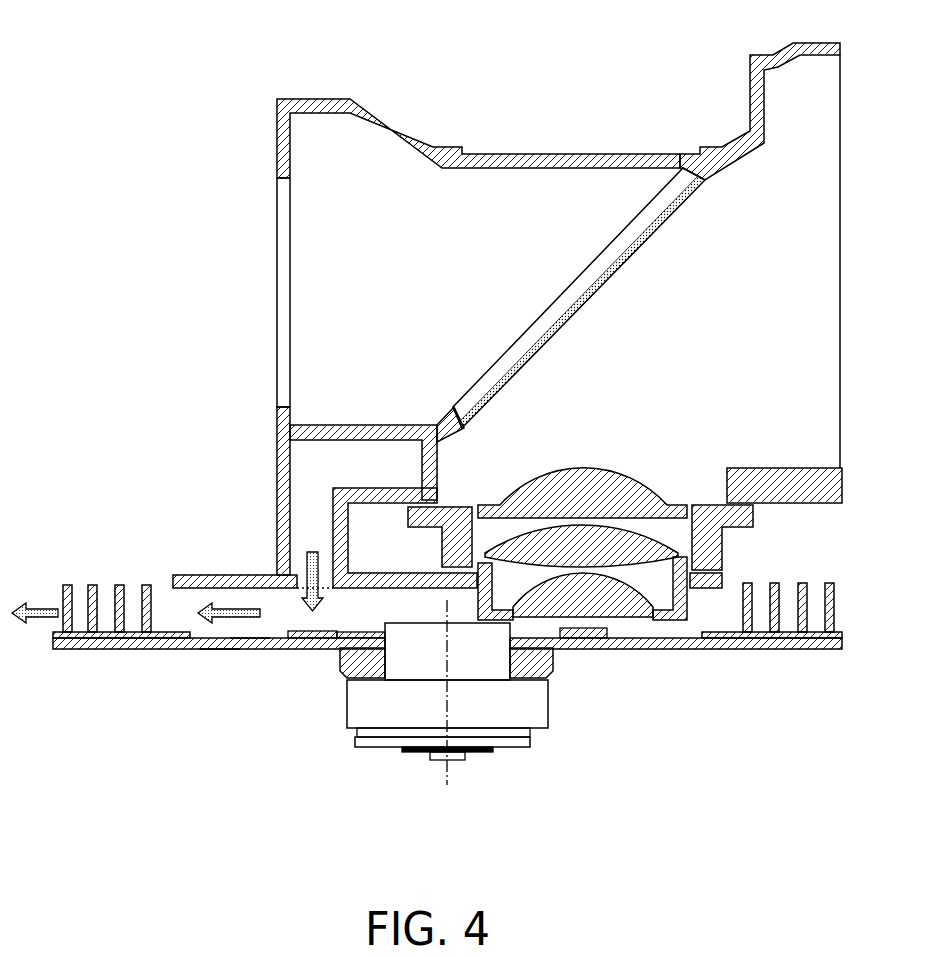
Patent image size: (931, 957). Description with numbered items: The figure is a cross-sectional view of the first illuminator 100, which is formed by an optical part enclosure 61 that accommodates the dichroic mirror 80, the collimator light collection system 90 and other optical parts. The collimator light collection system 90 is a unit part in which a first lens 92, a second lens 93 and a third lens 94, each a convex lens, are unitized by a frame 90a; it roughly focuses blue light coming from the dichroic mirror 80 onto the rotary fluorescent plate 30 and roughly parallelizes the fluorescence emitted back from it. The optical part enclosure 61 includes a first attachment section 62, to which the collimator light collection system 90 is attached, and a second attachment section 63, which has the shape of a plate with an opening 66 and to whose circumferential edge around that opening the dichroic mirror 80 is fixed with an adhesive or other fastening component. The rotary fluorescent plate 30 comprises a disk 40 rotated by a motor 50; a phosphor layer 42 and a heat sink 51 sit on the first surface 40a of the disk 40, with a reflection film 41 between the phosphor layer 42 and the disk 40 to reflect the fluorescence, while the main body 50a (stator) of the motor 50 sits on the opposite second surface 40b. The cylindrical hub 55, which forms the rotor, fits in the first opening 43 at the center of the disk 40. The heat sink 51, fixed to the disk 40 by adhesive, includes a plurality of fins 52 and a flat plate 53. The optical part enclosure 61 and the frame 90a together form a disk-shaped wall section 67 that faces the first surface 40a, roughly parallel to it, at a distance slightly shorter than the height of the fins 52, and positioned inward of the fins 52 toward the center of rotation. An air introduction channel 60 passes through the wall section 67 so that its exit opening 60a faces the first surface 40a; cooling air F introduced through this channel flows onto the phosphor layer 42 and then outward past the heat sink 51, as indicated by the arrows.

The first illuminator 100 is at (250, 93).
The rotary fluorescent plate 30 is at (268, 771).
The disk 40 is at (197, 650).
The first surface 40a is at (250, 650).
The second surface 40b is at (222, 650).
The reflection film 41 is at (302, 627).
The phosphor layer 42 is at (266, 628).
The first opening 43 is at (517, 688).
The motor 50 is at (486, 721).
The main body 50a is at (522, 750).
The heat sink 51 is at (432, 535).
The fins 52 is at (88, 584).
The flat plate 53 is at (108, 632).
The hub 55 is at (500, 645).
The air introduction channel 60 is at (304, 524).
The opening 60a is at (284, 592).
The optical part enclosure 61 is at (283, 440).
The first attachment section 62 is at (385, 528).
The second attachment section 63 is at (442, 396).
The opening 66 is at (467, 407).
The wall section 67 is at (202, 594).
The dichroic mirror 80 is at (602, 288).
The collimator light collection system 90 is at (582, 483).
The frame 90a is at (723, 550).
The first lens 92 is at (630, 572).
The second lens 93 is at (576, 523).
The third lens 94 is at (528, 478).
The air F is at (303, 562).